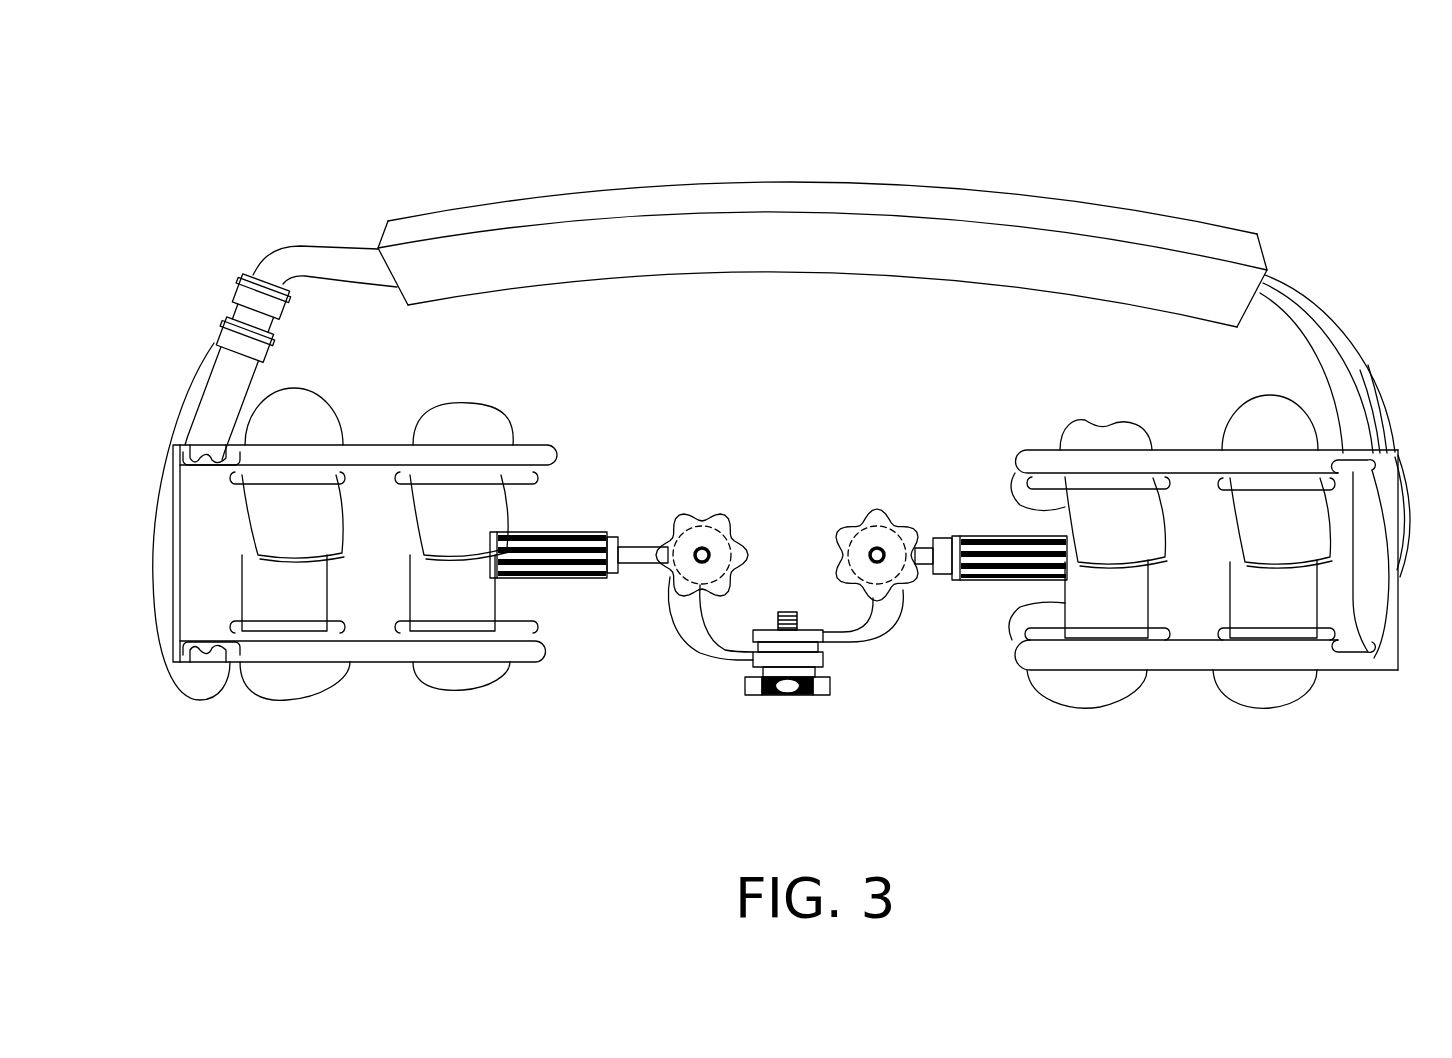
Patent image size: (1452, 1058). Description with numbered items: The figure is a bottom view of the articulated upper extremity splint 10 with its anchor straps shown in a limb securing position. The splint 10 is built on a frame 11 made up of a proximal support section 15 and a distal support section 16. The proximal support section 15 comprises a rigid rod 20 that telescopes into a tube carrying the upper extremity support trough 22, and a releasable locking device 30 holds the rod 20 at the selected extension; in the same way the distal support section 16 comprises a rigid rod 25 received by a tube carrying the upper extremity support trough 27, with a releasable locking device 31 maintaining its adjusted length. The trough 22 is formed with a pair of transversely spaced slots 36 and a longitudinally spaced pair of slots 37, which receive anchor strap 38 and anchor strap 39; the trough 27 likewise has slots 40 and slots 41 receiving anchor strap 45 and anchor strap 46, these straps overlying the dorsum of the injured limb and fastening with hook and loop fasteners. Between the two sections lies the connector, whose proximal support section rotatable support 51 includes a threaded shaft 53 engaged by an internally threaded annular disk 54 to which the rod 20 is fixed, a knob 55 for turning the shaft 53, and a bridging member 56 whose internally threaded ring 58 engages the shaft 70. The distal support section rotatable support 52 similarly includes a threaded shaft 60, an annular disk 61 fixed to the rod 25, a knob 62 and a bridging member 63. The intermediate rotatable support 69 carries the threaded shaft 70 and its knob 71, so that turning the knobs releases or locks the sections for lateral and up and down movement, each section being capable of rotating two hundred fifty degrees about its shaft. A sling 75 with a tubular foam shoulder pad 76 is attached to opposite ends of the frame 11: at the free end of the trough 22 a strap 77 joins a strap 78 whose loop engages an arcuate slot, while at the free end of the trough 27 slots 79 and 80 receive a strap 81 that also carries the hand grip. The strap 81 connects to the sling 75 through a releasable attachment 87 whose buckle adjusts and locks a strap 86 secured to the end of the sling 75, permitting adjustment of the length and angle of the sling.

The articulated upper extremity splint 10 is at (738, 100).
The frame 11 is at (403, 388).
The proximal support section 15 is at (1198, 615).
The distal support section 16 is at (401, 574).
The rigid rod 20 is at (930, 565).
The upper extremity support trough 22 is at (1035, 660).
The rigid rod 25 is at (640, 547).
The upper extremity support trough 27 is at (548, 468).
The releasable locking device 30 is at (1010, 550).
The releasable locking device 31 is at (545, 578).
The slots 36 is at (1312, 510).
The slots 37 is at (1010, 488).
The anchor strap 38 is at (1275, 432).
The anchor strap 39 is at (1102, 430).
The slots 40 is at (343, 483).
The slots 41 is at (530, 477).
The anchor strap 45 is at (298, 402).
The anchor strap 46 is at (485, 435).
The proximal support section rotatable support 51 is at (860, 502).
The distal support section rotatable support 52 is at (711, 488).
The threaded shaft 53 is at (870, 552).
The internally threaded annular disk 54 is at (862, 490).
The knob 55 is at (900, 518).
The bridging member 56 is at (884, 655).
The ring 58 is at (780, 595).
The threaded shaft 60 is at (700, 548).
The internally threaded annular disk 61 is at (670, 566).
The knob 62 is at (740, 560).
The bridging member 63 is at (686, 655).
The intermediate rotatable support 69 is at (766, 736).
The threaded shaft 70 is at (797, 630).
The knob 71 is at (793, 696).
The sling 75 is at (896, 441).
The shoulder pad 76 is at (580, 196).
The strap 77 is at (1330, 362).
The strap 78 is at (1407, 533).
The slot 79 is at (205, 470).
The slot 80 is at (212, 640).
The strap 81 is at (215, 400).
The strap 86 is at (302, 248).
The releasable attachment 87 is at (230, 300).